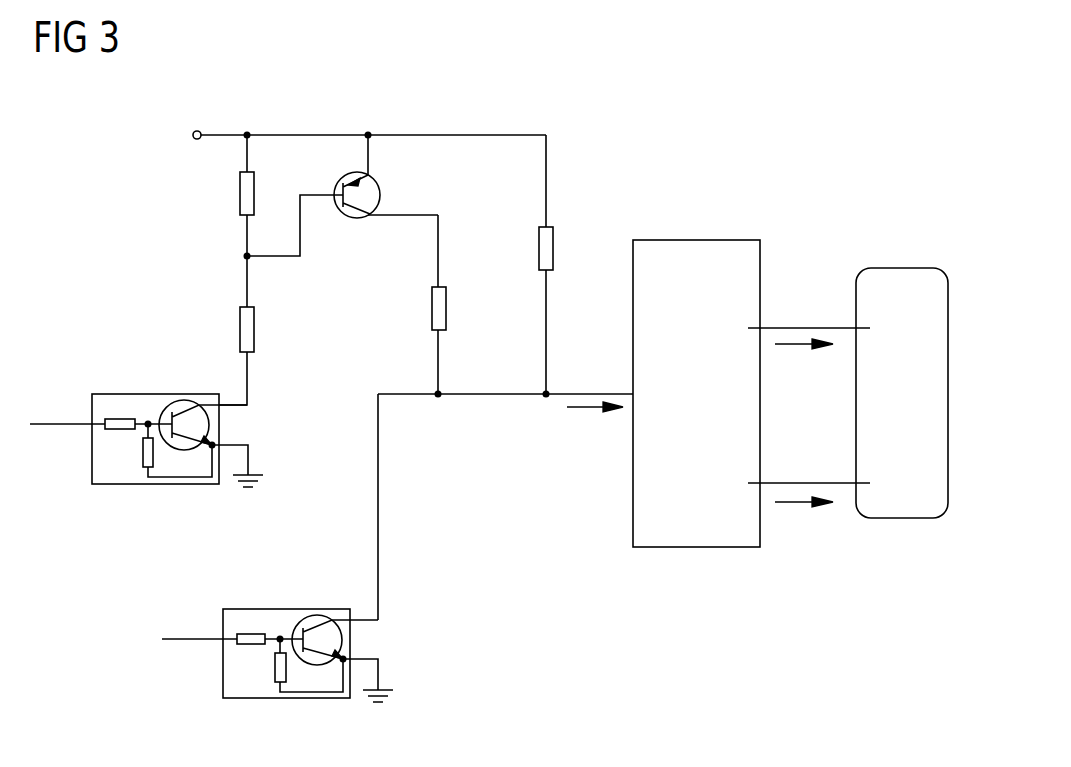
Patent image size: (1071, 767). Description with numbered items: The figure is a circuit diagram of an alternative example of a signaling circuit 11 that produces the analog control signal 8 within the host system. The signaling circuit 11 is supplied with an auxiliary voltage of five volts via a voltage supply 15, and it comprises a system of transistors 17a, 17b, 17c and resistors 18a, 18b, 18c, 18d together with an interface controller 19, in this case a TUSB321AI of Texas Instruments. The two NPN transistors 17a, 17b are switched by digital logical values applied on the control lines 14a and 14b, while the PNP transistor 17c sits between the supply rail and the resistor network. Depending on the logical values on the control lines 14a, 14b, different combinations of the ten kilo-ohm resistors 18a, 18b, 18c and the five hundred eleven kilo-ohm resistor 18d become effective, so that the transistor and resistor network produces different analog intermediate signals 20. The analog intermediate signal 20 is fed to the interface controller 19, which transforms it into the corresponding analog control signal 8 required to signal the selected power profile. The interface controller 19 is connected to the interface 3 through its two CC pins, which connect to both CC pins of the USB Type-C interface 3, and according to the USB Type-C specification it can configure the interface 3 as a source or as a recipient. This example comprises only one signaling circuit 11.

The interface 3 is at (897, 268).
The analog control signal 8 is at (797, 347).
The signaling circuit 11 is at (556, 616).
The control line 14a is at (52, 424).
The control line 14b is at (183, 639).
The voltage supply 15 is at (193, 135).
The transistor 17a is at (143, 394).
The transistor 17b is at (273, 609).
The transistor 17c is at (380, 182).
The resistor 18a is at (254, 328).
The resistor 18b is at (447, 308).
The resistor 18c is at (240, 190).
The resistor 18d is at (539, 246).
The interface controller 19 is at (693, 548).
The analog intermediate signal 20 is at (587, 410).